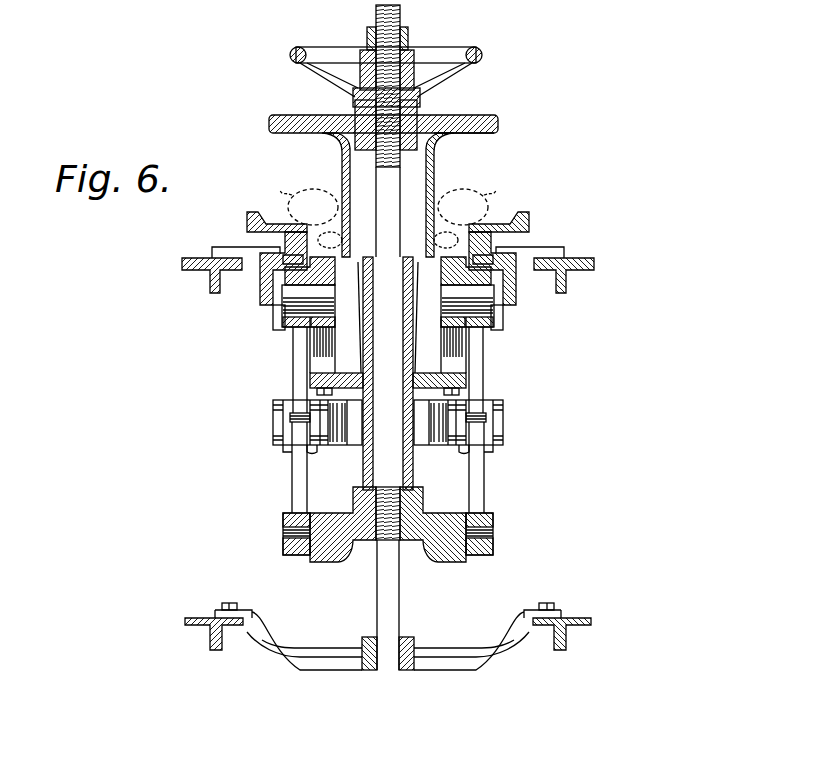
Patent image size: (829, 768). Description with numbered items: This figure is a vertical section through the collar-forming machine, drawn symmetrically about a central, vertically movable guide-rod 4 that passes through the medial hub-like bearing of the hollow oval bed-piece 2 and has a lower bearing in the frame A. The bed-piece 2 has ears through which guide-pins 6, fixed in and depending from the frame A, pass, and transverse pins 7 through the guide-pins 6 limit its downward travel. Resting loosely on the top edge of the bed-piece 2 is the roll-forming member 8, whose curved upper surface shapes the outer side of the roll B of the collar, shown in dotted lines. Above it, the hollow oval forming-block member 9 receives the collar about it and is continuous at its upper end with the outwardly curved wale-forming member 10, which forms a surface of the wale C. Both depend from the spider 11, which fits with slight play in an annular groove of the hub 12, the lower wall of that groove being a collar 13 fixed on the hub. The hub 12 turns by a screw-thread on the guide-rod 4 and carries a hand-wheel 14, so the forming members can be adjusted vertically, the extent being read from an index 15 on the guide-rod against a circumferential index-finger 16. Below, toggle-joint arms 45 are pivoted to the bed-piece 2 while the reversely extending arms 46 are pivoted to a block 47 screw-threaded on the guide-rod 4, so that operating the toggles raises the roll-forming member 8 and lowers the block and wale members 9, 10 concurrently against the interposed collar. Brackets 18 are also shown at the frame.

The bed-piece 2 is at (330, 291).
The guide-rod 4 is at (388, 373).
The guide-pins 6 is at (259, 280).
The pins 7 is at (280, 330).
The roll-forming member 8 is at (434, 265).
The forming-block member 9 is at (428, 168).
The wale-forming member 10 is at (466, 134).
The spider 11 is at (456, 116).
The hub 12 is at (354, 96).
The collar 13 is at (351, 147).
The hand-wheel 14 is at (481, 60).
The index 15 is at (376, 17).
The index-finger 16 is at (408, 38).
The bracket 18 is at (250, 212).
The toggle-joint arms 45 is at (293, 358).
The toggle-joint arms 46 is at (294, 476).
The block 47 is at (425, 542).
The frame A is at (200, 272).
The roll B is at (388, 240).
The wale C is at (388, 207).